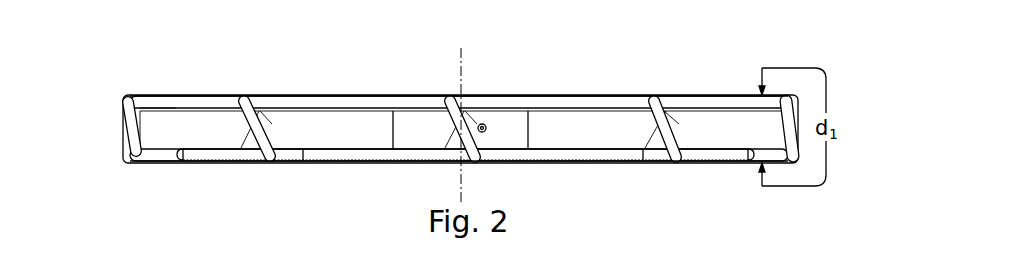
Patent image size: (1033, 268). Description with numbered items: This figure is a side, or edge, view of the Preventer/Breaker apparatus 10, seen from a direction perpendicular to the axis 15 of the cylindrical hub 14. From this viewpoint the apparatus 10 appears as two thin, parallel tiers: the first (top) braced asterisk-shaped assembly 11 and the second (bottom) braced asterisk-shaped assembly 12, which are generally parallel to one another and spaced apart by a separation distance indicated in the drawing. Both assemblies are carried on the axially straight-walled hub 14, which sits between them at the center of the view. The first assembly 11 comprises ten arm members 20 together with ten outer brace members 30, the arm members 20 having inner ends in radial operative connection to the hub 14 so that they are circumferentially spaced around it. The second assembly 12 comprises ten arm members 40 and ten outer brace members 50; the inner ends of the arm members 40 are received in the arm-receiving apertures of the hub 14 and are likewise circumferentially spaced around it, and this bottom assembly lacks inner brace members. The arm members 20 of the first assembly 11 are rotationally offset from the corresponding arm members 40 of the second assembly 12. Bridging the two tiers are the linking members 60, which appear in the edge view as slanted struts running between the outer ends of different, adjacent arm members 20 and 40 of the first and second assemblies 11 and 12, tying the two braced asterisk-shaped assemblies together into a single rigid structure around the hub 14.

The apparatus 10 is at (424, 106).
The first (top) braced asterisk-shaped assembly 11 is at (110, 93).
The second (bottom) braced asterisk-shaped assembly 12 is at (110, 156).
The cylindrical hub 14 is at (517, 138).
The axis 15 is at (463, 63).
The arm members 20 is at (181, 109).
The outer brace members 30 is at (335, 103).
The arm members 40 is at (170, 153).
The outer brace members 50 is at (352, 153).
The linking members 60 is at (787, 128).